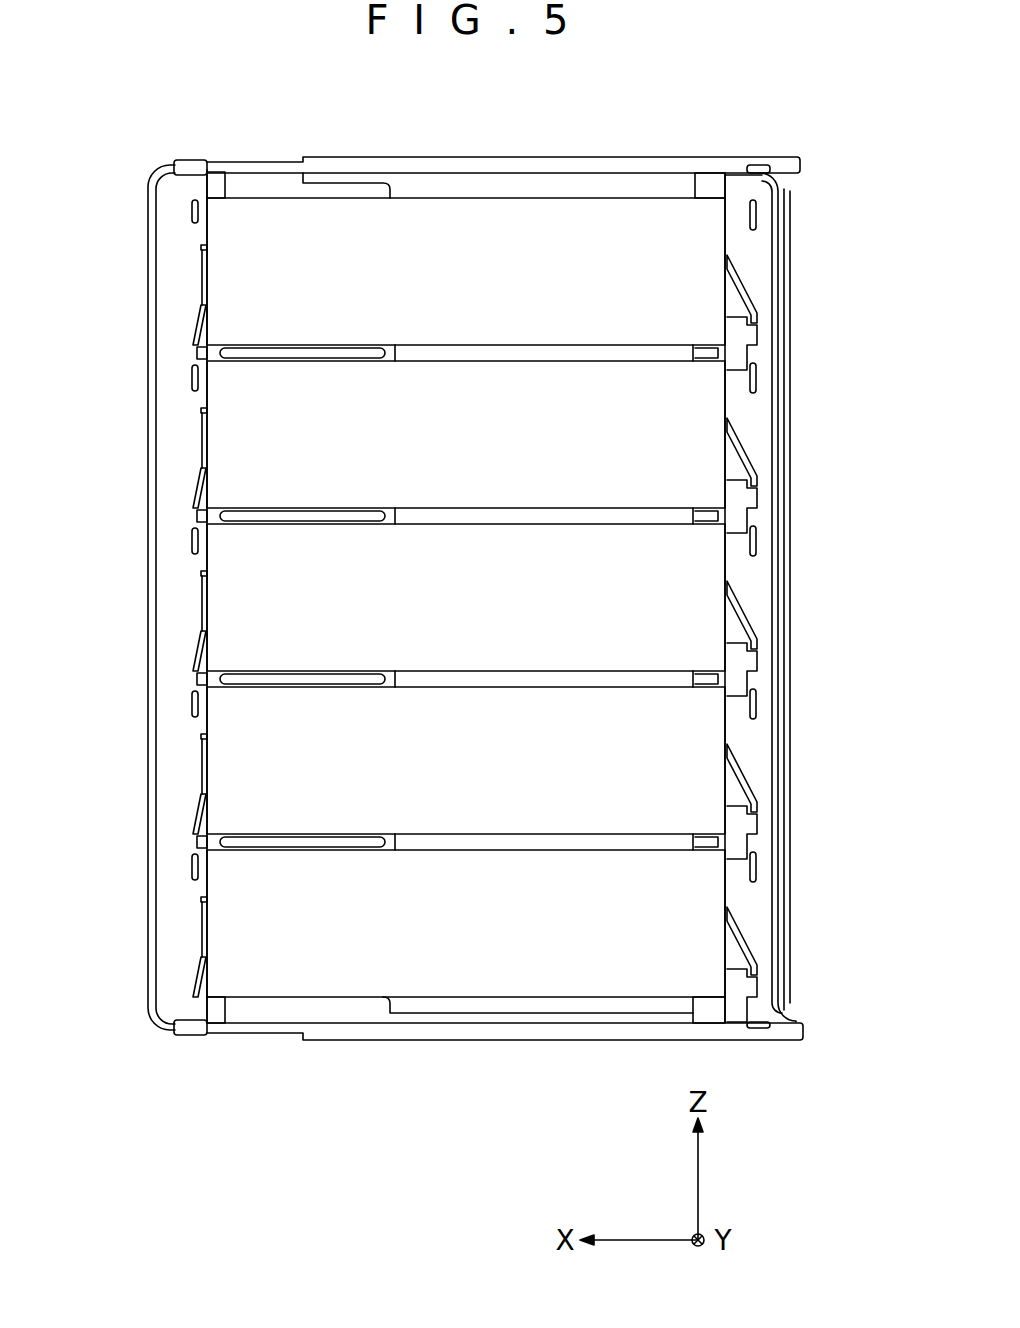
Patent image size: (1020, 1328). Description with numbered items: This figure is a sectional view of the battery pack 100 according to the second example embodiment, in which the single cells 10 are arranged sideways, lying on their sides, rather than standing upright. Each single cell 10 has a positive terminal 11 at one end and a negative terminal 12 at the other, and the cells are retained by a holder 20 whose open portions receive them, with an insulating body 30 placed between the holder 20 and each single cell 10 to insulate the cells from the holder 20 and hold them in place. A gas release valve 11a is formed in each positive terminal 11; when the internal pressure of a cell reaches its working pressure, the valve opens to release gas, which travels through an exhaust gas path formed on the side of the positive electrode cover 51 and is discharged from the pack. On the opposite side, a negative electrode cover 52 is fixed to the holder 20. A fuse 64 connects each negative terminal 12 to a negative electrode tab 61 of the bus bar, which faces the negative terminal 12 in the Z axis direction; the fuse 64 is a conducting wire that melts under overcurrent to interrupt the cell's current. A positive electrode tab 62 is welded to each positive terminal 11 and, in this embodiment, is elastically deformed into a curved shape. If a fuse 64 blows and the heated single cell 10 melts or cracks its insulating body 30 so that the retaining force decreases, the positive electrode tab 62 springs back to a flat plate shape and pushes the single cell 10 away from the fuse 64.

The battery pack 100 is at (803, 143).
The single cell 10 is at (466, 597).
The holder 20 is at (276, 346).
The insulating body 30 is at (262, 352).
The positive electrode cover 51 is at (152, 341).
The negative electrode cover 52 is at (786, 336).
The positive terminal 11 is at (205, 440).
The gas release valve 11a is at (204, 410).
The positive electrode tab 62 is at (199, 476).
The negative terminal 12 is at (727, 402).
The fuse 64 is at (742, 452).
The negative electrode tab 61 is at (753, 490).